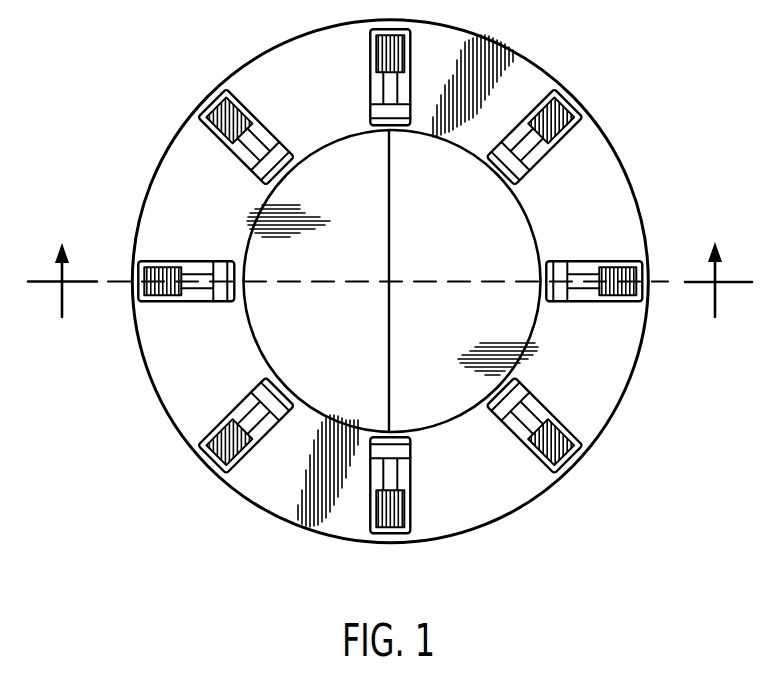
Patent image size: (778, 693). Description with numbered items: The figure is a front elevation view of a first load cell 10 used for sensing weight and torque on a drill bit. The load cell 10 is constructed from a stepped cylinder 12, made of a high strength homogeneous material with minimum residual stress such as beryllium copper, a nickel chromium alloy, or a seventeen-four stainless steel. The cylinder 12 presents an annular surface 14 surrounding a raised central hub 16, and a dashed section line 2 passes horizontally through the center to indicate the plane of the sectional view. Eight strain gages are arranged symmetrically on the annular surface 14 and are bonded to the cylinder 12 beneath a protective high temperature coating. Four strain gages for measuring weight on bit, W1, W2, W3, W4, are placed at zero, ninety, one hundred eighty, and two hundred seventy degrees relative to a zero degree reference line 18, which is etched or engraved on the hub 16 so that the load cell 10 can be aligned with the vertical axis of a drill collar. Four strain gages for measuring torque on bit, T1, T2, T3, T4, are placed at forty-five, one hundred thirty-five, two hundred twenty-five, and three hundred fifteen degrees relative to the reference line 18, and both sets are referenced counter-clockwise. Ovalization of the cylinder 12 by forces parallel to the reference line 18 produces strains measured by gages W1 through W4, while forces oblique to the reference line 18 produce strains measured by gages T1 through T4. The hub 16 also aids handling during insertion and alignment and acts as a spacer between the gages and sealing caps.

The load cell 10 is at (420, 308).
The stepped cylinder 12 is at (628, 393).
The annular surface 14 is at (608, 342).
The raised central hub 16 is at (508, 233).
The zero degree reference line 18 is at (389, 257).
The section line 2- 2 is at (390, 283).
The strain gage for measuring WOB W1 is at (408, 76).
The strain gage for measuring WOB W2 is at (186, 273).
The strain gage for measuring WOB W3 is at (407, 486).
The strain gage for measuring WOB W4 is at (594, 270).
The strain gage for measuring TOB T1 is at (246, 137).
The strain gage for measuring TOB T2 is at (246, 425).
The strain gage for measuring TOB T3 is at (534, 425).
The strain gage for measuring TOB T4 is at (536, 137).